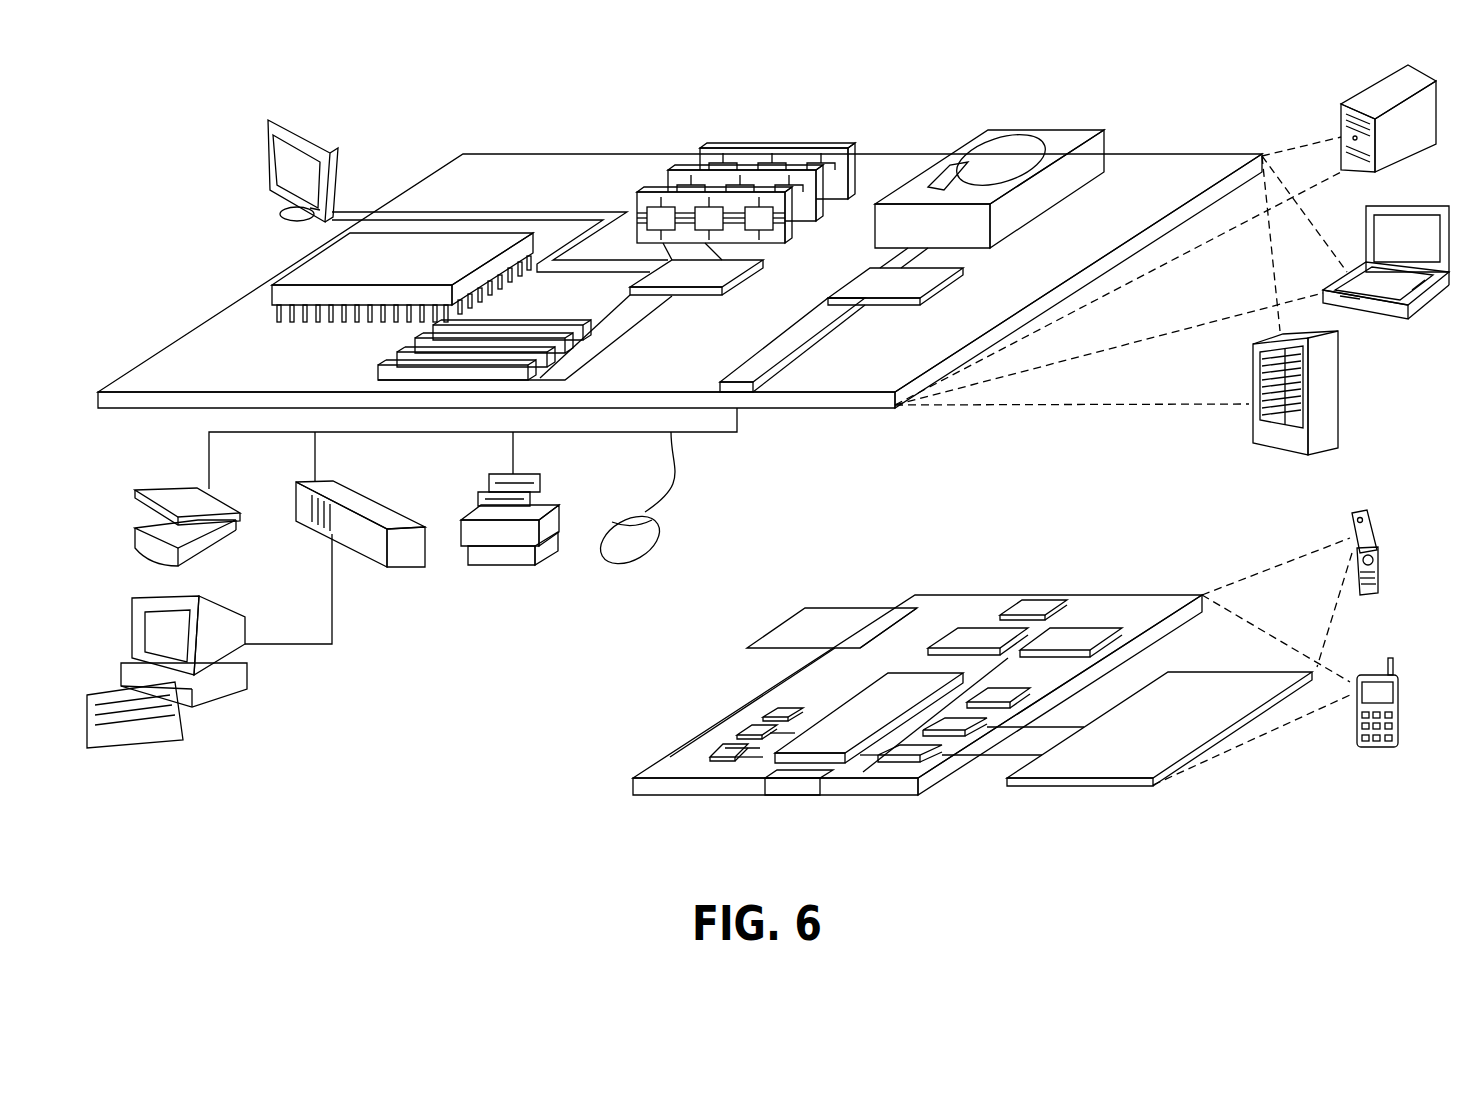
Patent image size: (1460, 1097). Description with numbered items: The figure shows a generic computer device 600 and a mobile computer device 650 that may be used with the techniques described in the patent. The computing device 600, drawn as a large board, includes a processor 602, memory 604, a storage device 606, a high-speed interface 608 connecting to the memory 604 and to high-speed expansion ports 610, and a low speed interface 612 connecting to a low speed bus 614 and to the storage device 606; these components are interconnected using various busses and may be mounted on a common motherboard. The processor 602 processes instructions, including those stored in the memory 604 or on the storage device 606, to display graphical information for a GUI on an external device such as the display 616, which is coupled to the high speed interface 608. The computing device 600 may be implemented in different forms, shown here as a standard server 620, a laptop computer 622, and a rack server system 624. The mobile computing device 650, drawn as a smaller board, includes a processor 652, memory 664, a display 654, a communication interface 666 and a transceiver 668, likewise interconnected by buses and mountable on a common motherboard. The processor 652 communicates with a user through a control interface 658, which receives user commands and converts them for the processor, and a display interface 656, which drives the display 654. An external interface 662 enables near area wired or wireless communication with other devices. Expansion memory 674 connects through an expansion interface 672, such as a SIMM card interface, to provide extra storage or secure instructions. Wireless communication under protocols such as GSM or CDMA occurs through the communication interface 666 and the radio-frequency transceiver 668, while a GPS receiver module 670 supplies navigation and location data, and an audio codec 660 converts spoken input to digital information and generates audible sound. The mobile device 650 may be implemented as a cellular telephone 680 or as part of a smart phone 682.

The computing device 600 is at (413, 100).
The processor 602 is at (300, 265).
The memory 604 is at (785, 150).
The storage device 606 is at (1036, 126).
The high-speed interface 608 is at (712, 272).
The high-speed expansion ports 610 is at (410, 352).
The low speed interface 612 is at (865, 280).
The low speed bus 614 is at (742, 376).
The display 616 is at (275, 120).
The standard server 620 is at (1365, 96).
The laptop computer 622 is at (1424, 206).
The rack server system 624 is at (1340, 396).
The mobile computer device 650 is at (590, 800).
The processor 652 is at (835, 722).
The display 654 is at (1203, 690).
The display interface 656 is at (922, 747).
The control interface 658 is at (960, 722).
The audio codec 660 is at (1005, 690).
The external interface 662 is at (793, 779).
The memory 664 is at (740, 733).
The communication interface 666 is at (980, 630).
The transceiver 668 is at (1077, 630).
The GPS receiver module 670 is at (1035, 605).
The expansion interface 672 is at (897, 607).
The expansion memory 674 is at (805, 607).
The cellular telephone 680 is at (1360, 512).
The smart phone 682 is at (1373, 675).